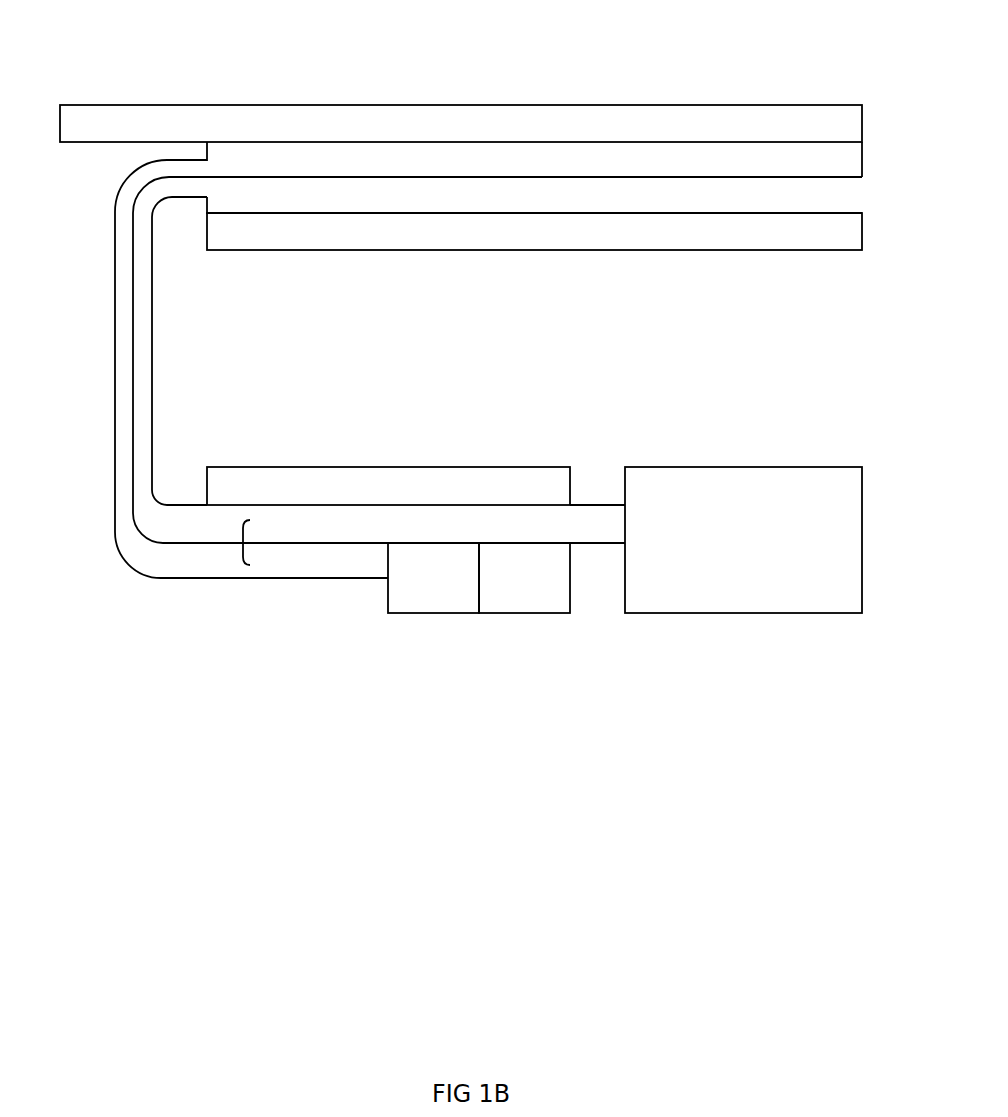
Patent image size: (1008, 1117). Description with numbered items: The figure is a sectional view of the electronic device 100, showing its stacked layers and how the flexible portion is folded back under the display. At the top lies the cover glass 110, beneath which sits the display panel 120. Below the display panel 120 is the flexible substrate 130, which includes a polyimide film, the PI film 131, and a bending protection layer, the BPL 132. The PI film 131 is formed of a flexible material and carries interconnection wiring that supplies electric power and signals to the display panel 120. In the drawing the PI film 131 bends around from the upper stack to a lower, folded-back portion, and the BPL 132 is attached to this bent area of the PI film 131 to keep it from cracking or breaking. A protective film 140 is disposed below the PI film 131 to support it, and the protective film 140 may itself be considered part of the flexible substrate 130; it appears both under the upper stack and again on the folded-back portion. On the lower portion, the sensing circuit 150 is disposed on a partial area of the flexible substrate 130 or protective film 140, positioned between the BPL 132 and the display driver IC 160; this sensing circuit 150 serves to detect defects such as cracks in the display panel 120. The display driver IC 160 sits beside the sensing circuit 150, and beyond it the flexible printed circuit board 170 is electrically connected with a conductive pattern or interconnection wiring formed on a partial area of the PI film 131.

The electronic device 100 is at (480, 32).
The cover glass 110 is at (461, 123).
The display panel 120 is at (488, 360).
The flexible substrate 130 is at (228, 548).
The PI film 131 is at (497, 360).
The bending protection layer 132 is at (315, 562).
The protective film 140 is at (534, 359).
The sensing circuit 150 is at (432, 617).
The display driver IC 160 is at (525, 617).
The flexible printed circuit board 170 is at (743, 540).